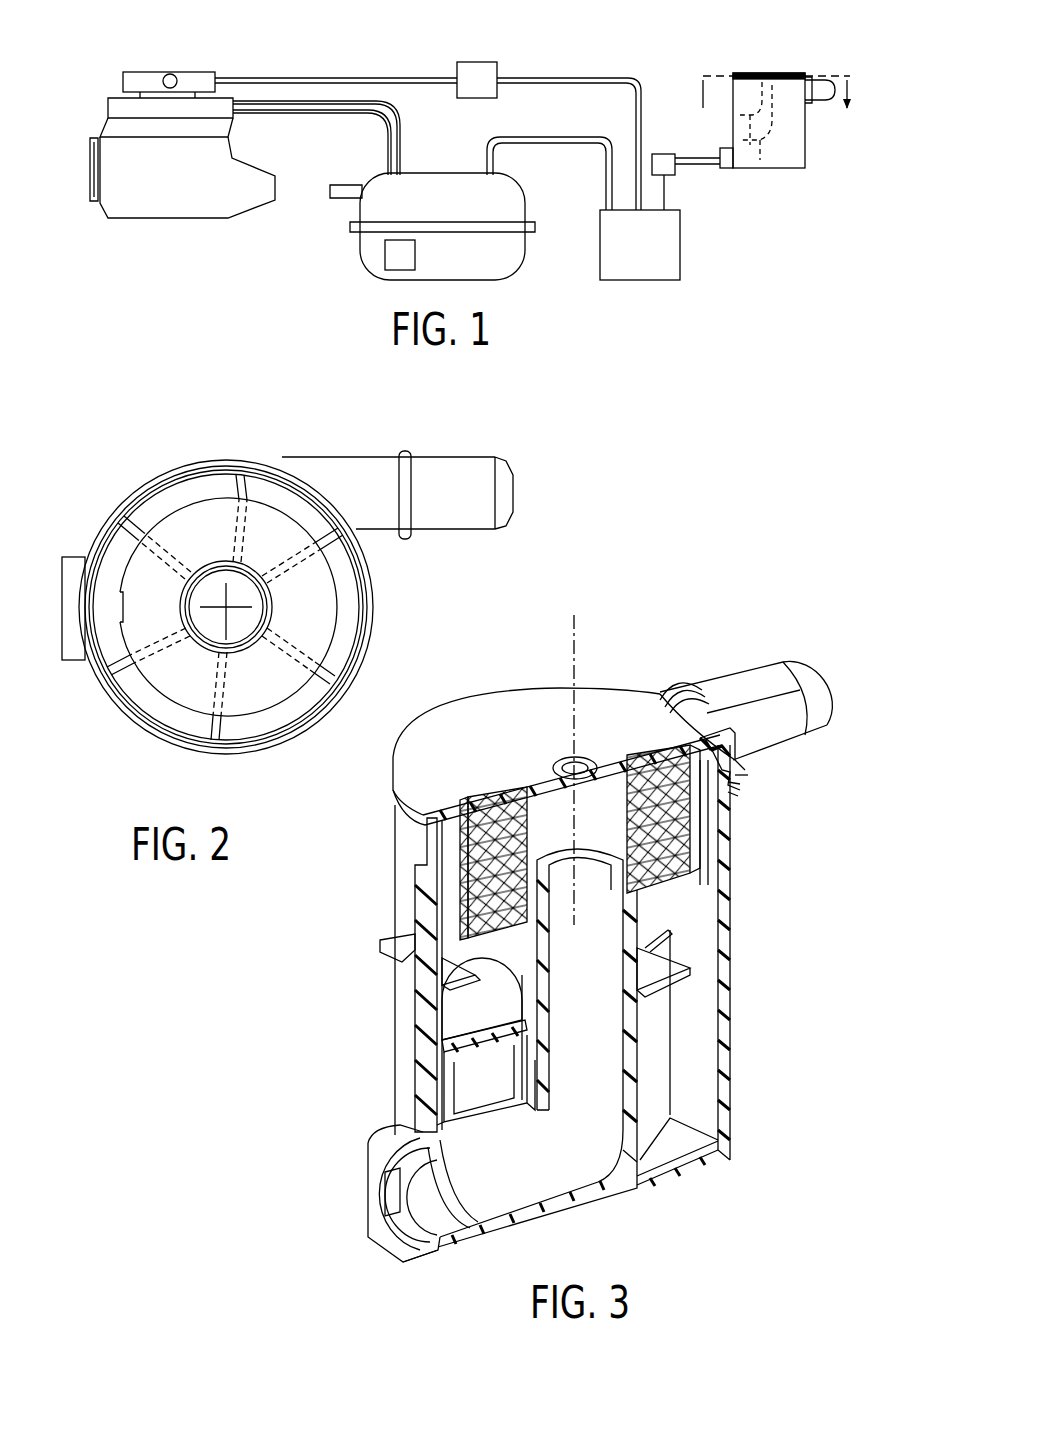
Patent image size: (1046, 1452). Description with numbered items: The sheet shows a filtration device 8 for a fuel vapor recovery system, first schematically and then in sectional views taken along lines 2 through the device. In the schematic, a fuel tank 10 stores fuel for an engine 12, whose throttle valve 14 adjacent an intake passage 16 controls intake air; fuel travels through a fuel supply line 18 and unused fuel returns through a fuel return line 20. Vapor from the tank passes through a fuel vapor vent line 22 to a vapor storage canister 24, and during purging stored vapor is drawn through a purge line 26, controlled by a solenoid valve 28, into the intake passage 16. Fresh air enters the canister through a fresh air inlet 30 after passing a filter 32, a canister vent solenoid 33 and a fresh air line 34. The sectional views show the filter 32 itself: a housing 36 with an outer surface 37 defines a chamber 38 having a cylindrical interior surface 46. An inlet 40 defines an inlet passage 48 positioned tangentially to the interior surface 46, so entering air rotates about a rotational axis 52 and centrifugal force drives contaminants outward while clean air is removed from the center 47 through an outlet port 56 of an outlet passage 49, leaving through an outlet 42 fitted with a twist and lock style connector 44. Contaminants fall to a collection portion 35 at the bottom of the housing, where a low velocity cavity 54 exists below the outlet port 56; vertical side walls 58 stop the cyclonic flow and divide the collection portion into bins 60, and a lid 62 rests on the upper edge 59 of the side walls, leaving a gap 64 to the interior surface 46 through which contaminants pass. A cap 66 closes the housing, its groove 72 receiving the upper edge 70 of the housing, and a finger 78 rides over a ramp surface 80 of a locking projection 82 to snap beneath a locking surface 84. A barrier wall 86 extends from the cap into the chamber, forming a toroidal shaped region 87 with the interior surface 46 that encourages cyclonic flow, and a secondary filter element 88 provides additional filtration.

In FIG. 1, the filtration device 8 is at (823, 180).
In FIG. 1, the section lines 2- 2 is at (775, 107).
In FIG. 1, the fuel tank 10 is at (442, 226).
In FIG. 1, the engine 12 is at (182, 158).
In FIG. 1, the throttle valve 14 is at (170, 74).
In FIG. 1, the intake passage 16 is at (136, 95).
In FIG. 1, the fuel supply line 18 is at (403, 136).
In FIG. 1, the fuel return line 20 is at (362, 119).
In FIG. 1, the fuel vapor vent line 22 is at (522, 138).
In FIG. 1, the vapor storage canister 24 is at (640, 245).
In FIG. 1, the purge line 26 is at (348, 77).
In FIG. 1, the solenoid valve 28 is at (477, 80).
In FIG. 1, the fresh air inlet 30 is at (681, 248).
In FIG. 1, the filter 32 is at (794, 182).
In FIG. 2, the filter 32 is at (92, 716).
In FIG. 3, the filter 32 is at (736, 942).
In FIG. 1, the canister vent solenoid 33 is at (676, 168).
In FIG. 1, the fresh air line 34 is at (720, 158).
In FIG. 3, the collection portion 35 is at (726, 1086).
In FIG. 2, the housing 36 is at (86, 667).
In FIG. 3, the housing 36 is at (731, 992).
In FIG. 2, the outer surface 37 is at (146, 737).
In FIG. 3, the outer surface 37 is at (733, 915).
In FIG. 2, the chamber 38 is at (228, 607).
In FIG. 3, the chamber 38 is at (731, 890).
In FIG. 2, the inlet 40 is at (455, 455).
In FIG. 3, the inlet 40 is at (726, 674).
In FIG. 2, the outlet 42 is at (72, 575).
In FIG. 3, the outlet 42 is at (427, 1268).
In FIG. 3, the twist and lock style connector 44 is at (386, 1162).
In FIG. 2, the interior surface 46 is at (200, 478).
In FIG. 3, the interior surface 46 is at (711, 866).
In FIG. 2, the center 47 is at (226, 607).
In FIG. 3, the center 47 is at (580, 949).
In FIG. 2, the inlet passage 48 is at (515, 496).
In FIG. 3, the inlet passage 48 is at (830, 692).
In FIG. 2, the outlet passage 49 is at (250, 572).
In FIG. 3, the outlet passage 49 is at (522, 978).
In FIG. 2, the rotational axis 52 is at (226, 602).
In FIG. 3, the rotational axis 52 is at (578, 646).
In FIG. 2, the low velocity cavity 54 is at (343, 632).
In FIG. 3, the low velocity cavity 54 is at (679, 1139).
In FIG. 2, the outlet port 56 is at (236, 652).
In FIG. 3, the outlet port 56 is at (580, 862).
In FIG. 2, the vertical side walls 58 is at (238, 488).
In FIG. 3, the vertical side walls 58 is at (652, 1062).
In FIG. 2, the upper edge 59 is at (126, 546).
In FIG. 3, the upper edge 59 is at (445, 982).
In FIG. 2, the bins 60 is at (242, 730).
In FIG. 3, the bins 60 is at (697, 1013).
In FIG. 2, the lid 62 is at (292, 753).
In FIG. 3, the lid 62 is at (484, 1029).
In FIG. 2, the gap 64 is at (346, 590).
In FIG. 3, the gap 64 is at (452, 1050).
In FIG. 3, the cap 66 is at (557, 756).
In FIG. 3, the upper edge 70 is at (702, 735).
In FIG. 3, the groove 72 is at (737, 742).
In FIG. 3, the finger 78 is at (738, 794).
In FIG. 3, the ramp surface 80 is at (736, 762).
In FIG. 3, the locking projection 82 is at (742, 772).
In FIG. 3, the locking surface 84 is at (738, 783).
In FIG. 3, the barrier wall 86 is at (711, 832).
In FIG. 3, the toroidal shaped region 87 is at (711, 812).
In FIG. 3, the secondary filter element 88 is at (522, 834).